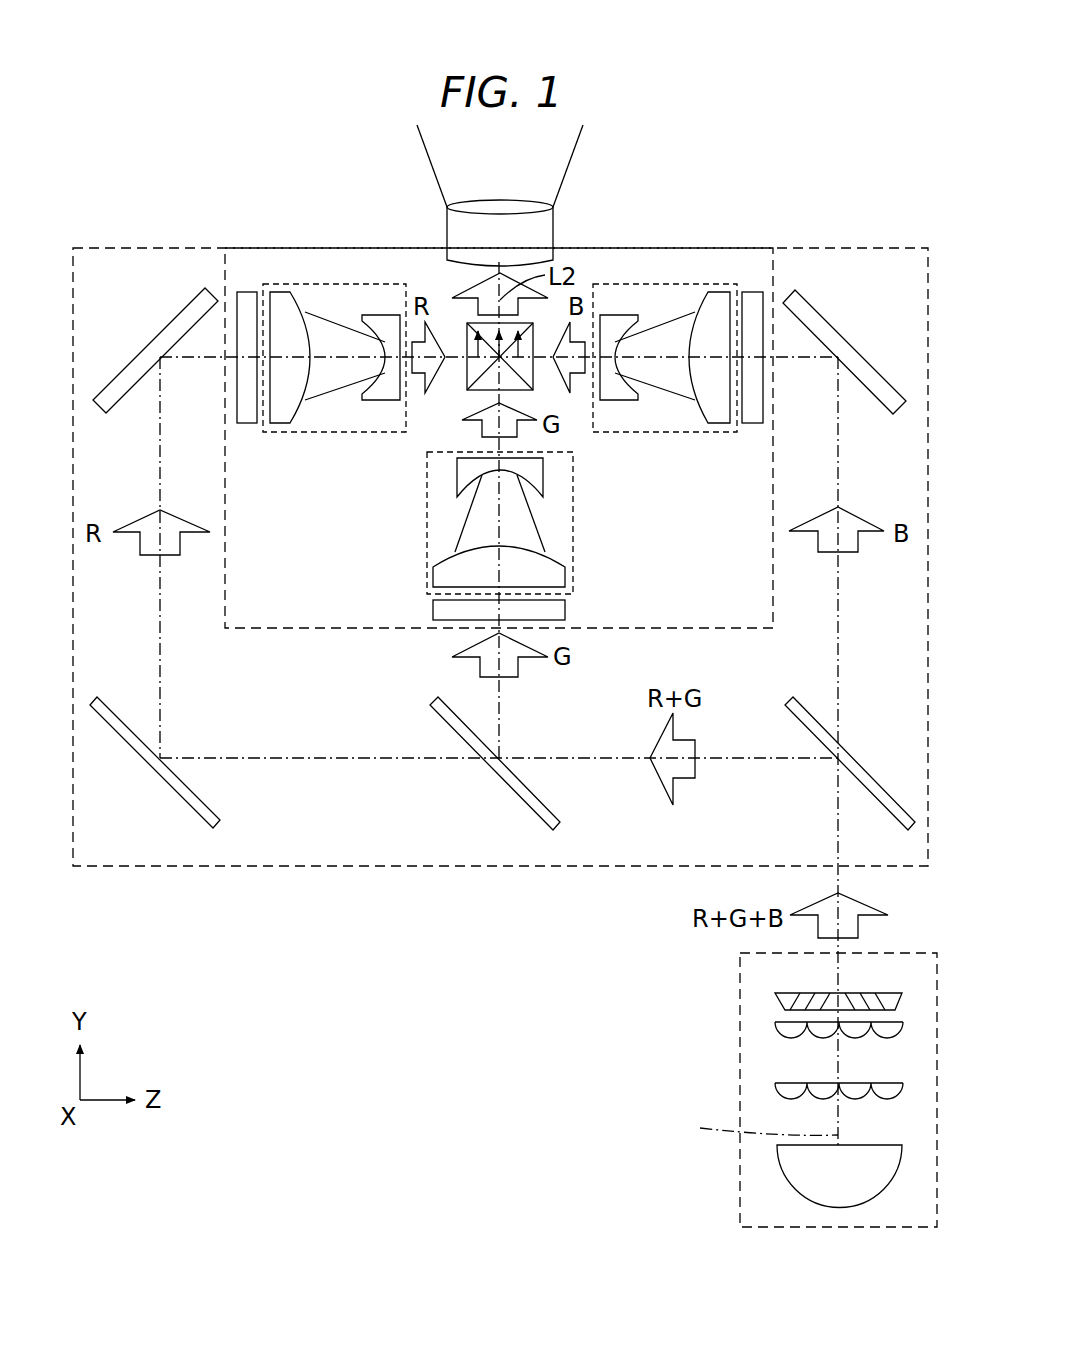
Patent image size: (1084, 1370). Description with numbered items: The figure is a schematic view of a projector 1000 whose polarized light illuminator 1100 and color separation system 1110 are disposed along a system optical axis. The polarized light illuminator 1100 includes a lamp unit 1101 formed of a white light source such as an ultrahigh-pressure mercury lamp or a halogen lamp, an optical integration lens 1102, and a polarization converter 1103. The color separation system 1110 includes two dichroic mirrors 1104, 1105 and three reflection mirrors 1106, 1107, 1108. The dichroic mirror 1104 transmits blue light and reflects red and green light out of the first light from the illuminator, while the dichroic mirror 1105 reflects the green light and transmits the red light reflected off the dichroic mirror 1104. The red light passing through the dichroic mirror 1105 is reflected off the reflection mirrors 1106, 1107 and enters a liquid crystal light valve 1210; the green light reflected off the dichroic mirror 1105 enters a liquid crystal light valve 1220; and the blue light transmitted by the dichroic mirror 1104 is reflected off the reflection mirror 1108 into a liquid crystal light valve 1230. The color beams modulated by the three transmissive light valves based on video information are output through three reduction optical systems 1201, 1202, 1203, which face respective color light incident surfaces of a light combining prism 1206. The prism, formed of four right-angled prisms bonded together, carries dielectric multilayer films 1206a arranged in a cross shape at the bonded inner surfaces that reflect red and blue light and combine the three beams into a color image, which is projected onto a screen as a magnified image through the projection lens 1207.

The projector 1000 is at (906, 149).
The color separation system 1110 is at (120, 246).
The reflection mirror 1107 is at (138, 354).
The liquid crystal light valve 1210 is at (247, 290).
The reduction optical system 1201 is at (345, 433).
The light combining prism 1206 is at (435, 348).
The dichroic film 1206a is at (462, 334).
The projection lens 1207 is at (553, 230).
The reduction optical system 1203 is at (660, 433).
The liquid crystal light valve 1230 is at (751, 290).
The reflection mirror 1108 is at (862, 352).
The reduction optical system 1202 is at (573, 547).
The liquid crystal light valve 1220 is at (565, 608).
The reflection mirror 1106 is at (213, 808).
The dichroic mirror 1105 is at (557, 808).
The dichroic mirror 1104 is at (885, 790).
The polarized light illuminator 1100 is at (740, 970).
The polarization converter 1103 is at (770, 990).
The optical integration lens 1102 is at (775, 1093).
The lamp unit 1101 is at (790, 1190).